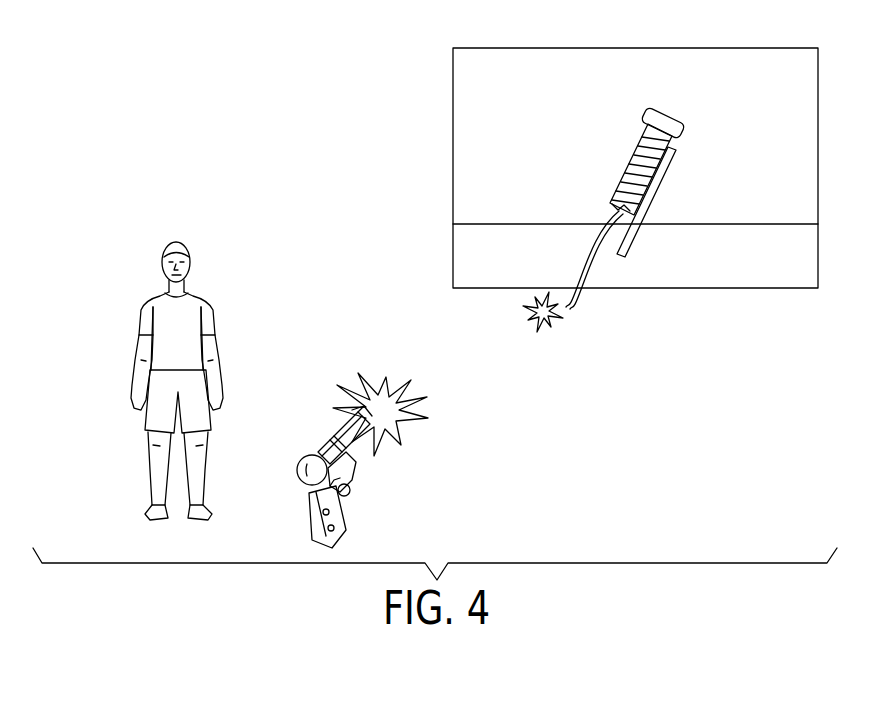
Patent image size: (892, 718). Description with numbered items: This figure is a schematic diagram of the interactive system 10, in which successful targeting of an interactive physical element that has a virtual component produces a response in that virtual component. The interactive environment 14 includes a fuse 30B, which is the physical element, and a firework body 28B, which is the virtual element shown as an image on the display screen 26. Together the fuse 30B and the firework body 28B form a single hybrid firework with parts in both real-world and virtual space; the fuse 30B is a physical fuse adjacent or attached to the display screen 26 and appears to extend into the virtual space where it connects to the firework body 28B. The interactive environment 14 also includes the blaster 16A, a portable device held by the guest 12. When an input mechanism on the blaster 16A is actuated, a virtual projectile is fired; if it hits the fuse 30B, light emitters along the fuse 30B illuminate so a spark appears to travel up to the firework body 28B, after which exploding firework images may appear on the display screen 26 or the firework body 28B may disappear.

The interactive system 10 is at (375, 40).
The guest 12 is at (190, 253).
The interactive environment 14 is at (326, 96).
The blaster 16A is at (298, 467).
The display screen 26 is at (637, 48).
The firework body 28B is at (680, 118).
The fuse 30B is at (578, 295).